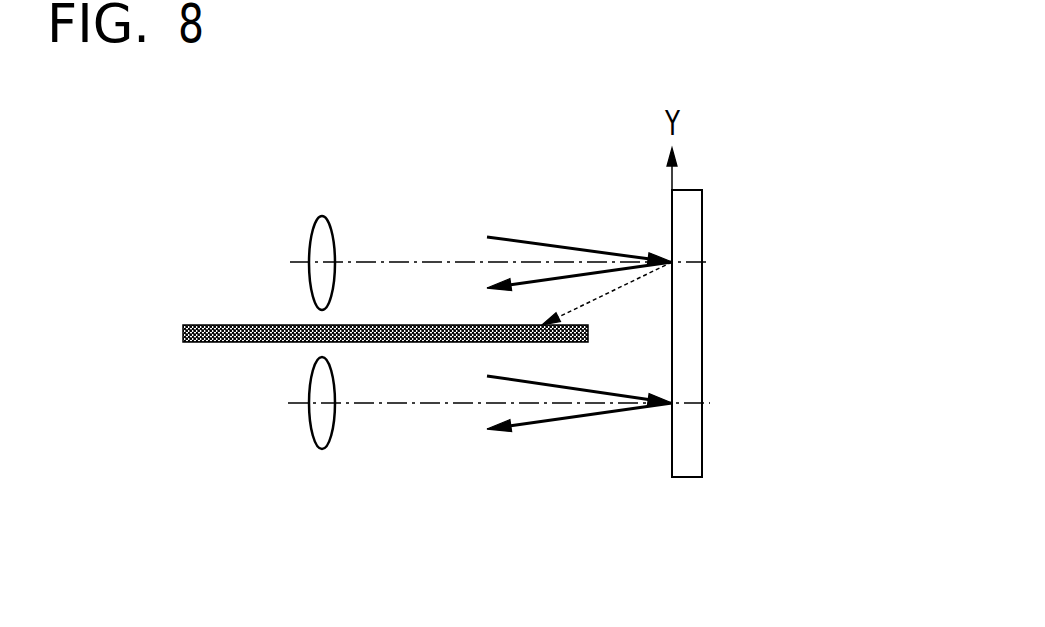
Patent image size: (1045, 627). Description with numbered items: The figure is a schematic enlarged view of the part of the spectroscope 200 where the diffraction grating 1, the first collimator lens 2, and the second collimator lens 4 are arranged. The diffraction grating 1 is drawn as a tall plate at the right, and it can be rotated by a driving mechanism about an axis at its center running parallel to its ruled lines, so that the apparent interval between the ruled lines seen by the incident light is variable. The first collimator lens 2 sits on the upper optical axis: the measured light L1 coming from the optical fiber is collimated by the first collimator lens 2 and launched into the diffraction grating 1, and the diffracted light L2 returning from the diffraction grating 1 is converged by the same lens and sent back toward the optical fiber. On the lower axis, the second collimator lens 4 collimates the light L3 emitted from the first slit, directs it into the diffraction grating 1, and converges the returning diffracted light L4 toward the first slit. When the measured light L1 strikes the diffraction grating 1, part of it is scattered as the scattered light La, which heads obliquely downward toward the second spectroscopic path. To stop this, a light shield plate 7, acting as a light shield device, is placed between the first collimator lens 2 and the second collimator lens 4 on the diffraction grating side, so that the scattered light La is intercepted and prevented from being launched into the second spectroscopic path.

The spectroscope 200 is at (743, 166).
The diffraction grating 1 is at (702, 213).
The first collimator lens 2 is at (322, 215).
The second collimator lens 4 is at (322, 449).
The light shield plate 7 is at (233, 343).
The measured light L1 is at (565, 246).
The diffracted light L2 is at (528, 285).
The scattered light La is at (604, 297).
The light L3 is at (611, 390).
The diffracted light L4 is at (575, 421).